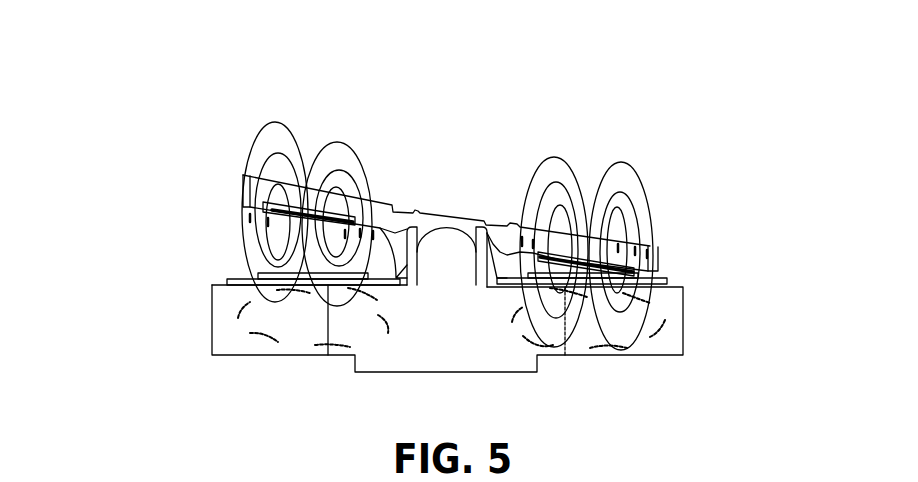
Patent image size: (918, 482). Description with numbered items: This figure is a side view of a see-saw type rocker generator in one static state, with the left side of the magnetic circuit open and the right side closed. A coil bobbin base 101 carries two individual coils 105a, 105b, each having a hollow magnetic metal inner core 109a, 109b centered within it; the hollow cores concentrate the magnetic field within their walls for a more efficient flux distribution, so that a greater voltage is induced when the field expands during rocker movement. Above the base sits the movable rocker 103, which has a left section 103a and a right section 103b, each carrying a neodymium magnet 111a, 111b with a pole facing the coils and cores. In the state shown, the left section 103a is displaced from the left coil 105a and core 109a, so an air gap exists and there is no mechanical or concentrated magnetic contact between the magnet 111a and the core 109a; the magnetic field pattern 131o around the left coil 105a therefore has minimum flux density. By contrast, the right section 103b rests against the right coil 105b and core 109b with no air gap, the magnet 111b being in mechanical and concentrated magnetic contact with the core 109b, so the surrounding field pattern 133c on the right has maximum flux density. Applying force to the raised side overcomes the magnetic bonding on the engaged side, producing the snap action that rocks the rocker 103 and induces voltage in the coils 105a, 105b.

The coil bobbin base 101 is at (442, 317).
The rocker 103 is at (443, 218).
The left section of rocker 103a is at (305, 182).
The right section of rocker 103b is at (600, 237).
The left coil 105a is at (225, 282).
The right coil 105b is at (667, 280).
The left hollow magnetic metal inner core 109a is at (270, 272).
The right hollow magnetic metal inner core 109b is at (573, 273).
The left neodymium magnet 111a is at (283, 213).
The right neodymium magnet 111b is at (560, 257).
The magnetic field pattern 131o is at (290, 343).
The surrounding field pattern 133c is at (612, 345).